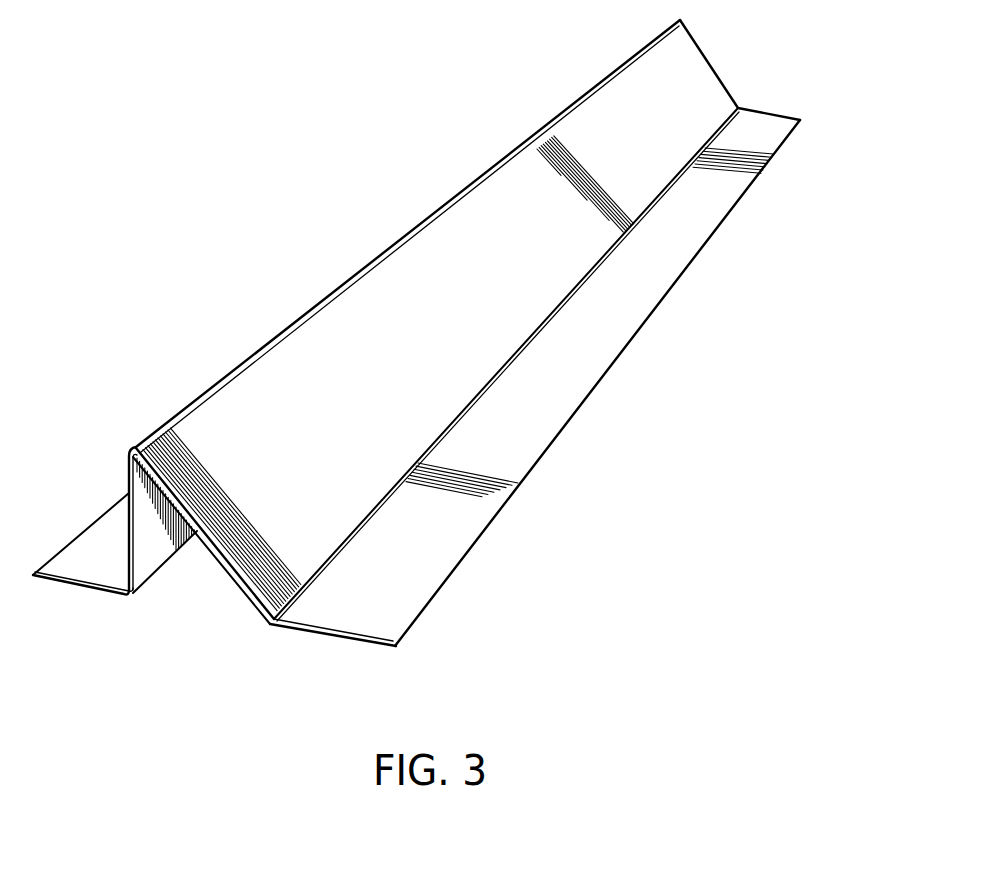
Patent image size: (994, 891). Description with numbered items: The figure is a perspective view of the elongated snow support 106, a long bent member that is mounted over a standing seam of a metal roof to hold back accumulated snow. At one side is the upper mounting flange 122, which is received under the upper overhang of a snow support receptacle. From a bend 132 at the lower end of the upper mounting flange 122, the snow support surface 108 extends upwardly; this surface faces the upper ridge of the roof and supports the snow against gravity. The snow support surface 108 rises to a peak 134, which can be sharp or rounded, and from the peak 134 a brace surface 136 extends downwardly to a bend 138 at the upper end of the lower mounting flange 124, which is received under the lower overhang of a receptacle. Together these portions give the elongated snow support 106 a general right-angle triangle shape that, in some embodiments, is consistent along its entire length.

The elongated snow support 106 is at (493, 213).
The snow support surface 108 is at (128, 481).
The upper mounting flange 122 is at (88, 568).
The lower mounting flange 124 is at (360, 618).
The bend 132 is at (133, 595).
The peak 134 is at (192, 407).
The brace surface 136 is at (235, 478).
The bend 138 is at (273, 621).